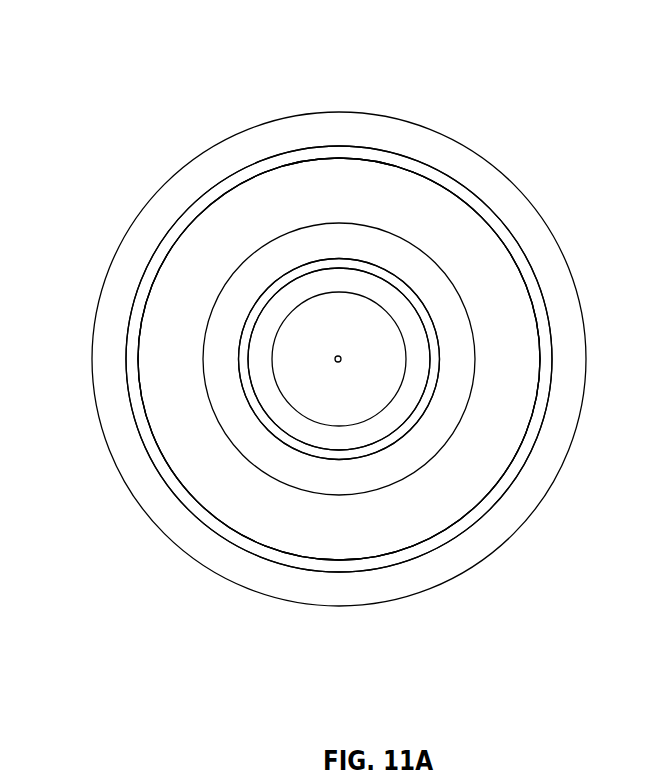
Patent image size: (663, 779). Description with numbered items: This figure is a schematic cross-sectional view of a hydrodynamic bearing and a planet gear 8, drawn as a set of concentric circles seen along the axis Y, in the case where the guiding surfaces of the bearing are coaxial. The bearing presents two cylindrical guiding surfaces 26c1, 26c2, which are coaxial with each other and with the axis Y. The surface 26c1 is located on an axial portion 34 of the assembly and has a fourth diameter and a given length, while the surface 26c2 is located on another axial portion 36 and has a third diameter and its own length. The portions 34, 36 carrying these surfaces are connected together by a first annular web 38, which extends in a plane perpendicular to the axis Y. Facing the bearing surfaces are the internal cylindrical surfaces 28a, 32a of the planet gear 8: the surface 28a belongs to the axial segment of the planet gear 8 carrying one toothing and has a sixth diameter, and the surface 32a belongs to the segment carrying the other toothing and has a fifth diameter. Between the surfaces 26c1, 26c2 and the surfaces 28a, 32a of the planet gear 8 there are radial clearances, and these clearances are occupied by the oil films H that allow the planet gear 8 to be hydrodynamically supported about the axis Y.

The planet gear 8 is at (272, 252).
The axial portion 36 is at (296, 188).
The first annular web 38 is at (296, 188).
The axial portion 34 is at (375, 285).
The oil films H is at (252, 313).
The axis Y is at (335, 357).
The internal cylindrical surface 28a is at (258, 411).
The internal cylindrical surface 32a is at (244, 533).
The surface 26c1 is at (355, 450).
The surface 26c2 is at (268, 550).